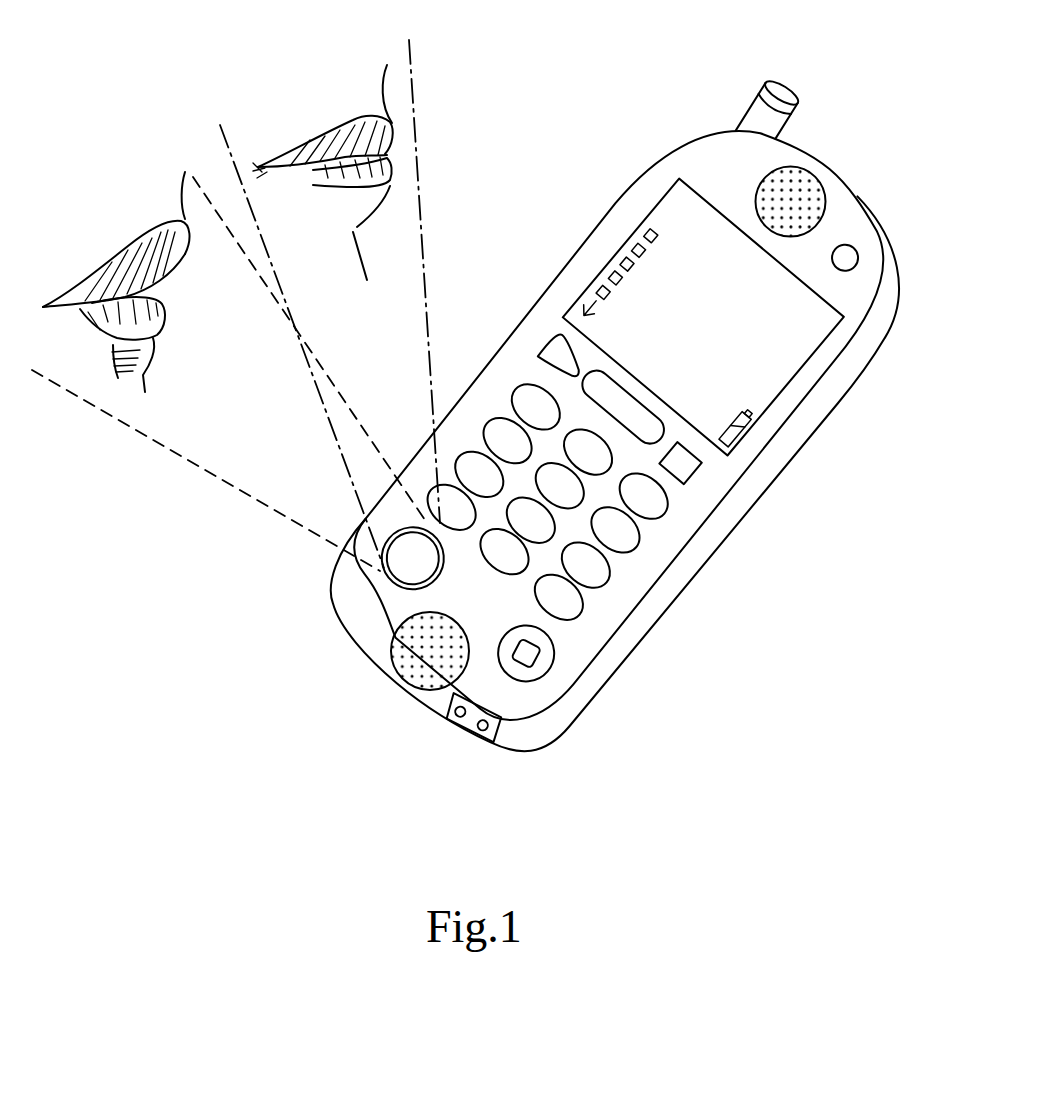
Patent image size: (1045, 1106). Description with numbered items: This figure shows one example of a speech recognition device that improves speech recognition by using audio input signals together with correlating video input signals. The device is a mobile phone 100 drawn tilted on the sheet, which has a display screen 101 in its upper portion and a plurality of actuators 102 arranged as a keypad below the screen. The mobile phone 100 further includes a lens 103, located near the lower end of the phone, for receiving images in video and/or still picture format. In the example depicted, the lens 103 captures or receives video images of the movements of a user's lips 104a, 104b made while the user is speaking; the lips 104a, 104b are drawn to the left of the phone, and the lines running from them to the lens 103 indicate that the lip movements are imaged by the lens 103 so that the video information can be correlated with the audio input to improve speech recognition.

The mobile phone 100 is at (855, 200).
The display screen 101 is at (840, 326).
The actuators 102 is at (675, 538).
The lens 103 is at (372, 588).
The user's lips 104a is at (86, 372).
The user's lips 104b is at (415, 115).